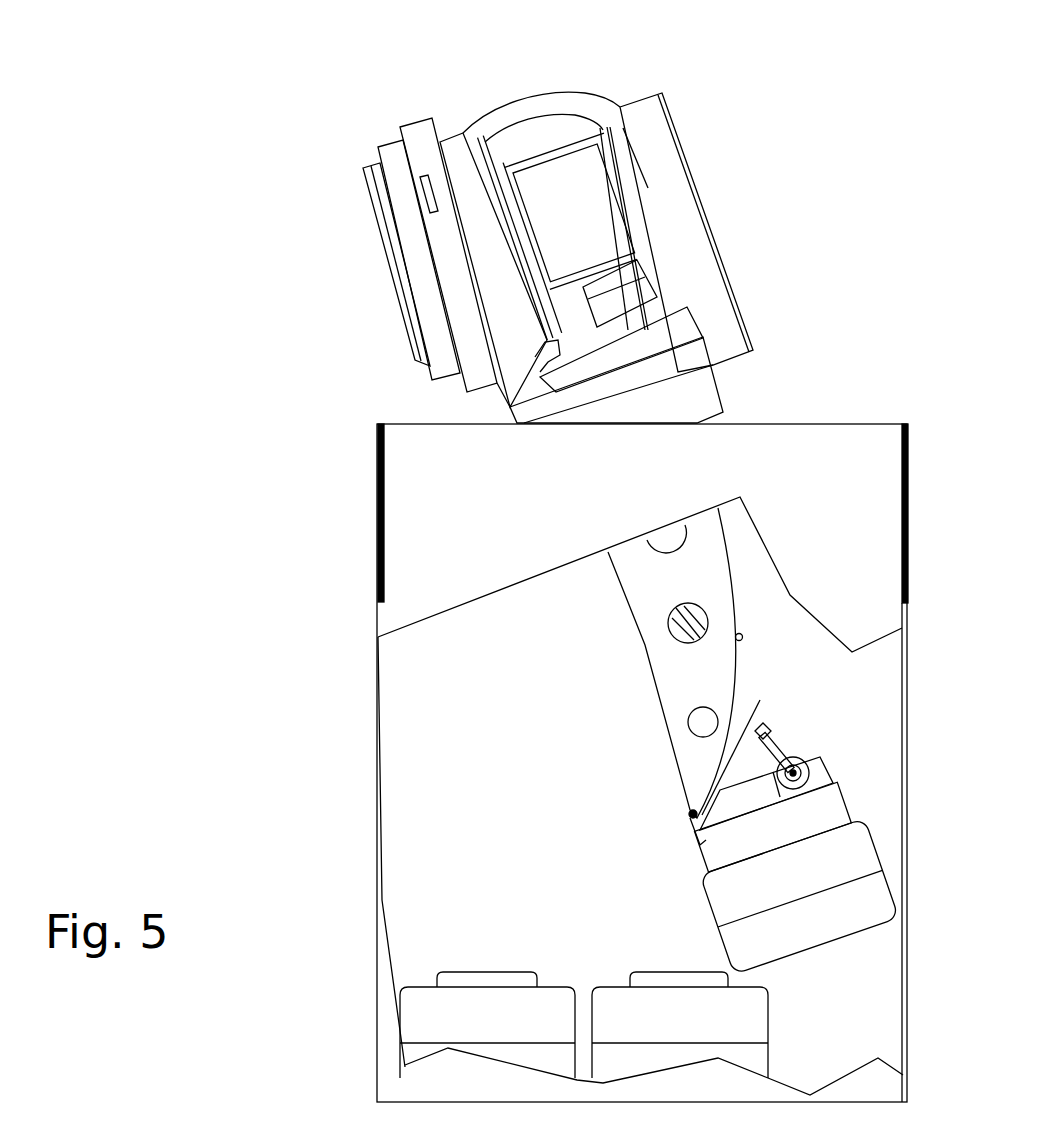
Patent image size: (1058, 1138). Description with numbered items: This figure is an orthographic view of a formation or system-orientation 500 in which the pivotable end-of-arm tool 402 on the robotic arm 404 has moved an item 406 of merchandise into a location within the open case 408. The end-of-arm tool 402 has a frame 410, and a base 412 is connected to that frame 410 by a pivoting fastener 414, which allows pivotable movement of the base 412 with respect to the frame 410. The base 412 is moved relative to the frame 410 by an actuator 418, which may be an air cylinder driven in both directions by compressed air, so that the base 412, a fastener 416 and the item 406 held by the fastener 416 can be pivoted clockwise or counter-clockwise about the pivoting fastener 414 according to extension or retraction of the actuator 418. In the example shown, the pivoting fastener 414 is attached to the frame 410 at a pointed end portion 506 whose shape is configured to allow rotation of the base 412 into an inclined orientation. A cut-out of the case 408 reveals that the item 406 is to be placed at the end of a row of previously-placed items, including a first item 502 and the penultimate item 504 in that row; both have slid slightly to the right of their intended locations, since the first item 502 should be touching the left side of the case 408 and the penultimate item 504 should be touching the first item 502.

The system-orientation 500 is at (814, 57).
The robotic arm 404 is at (363, 207).
The case 408 is at (375, 752).
The pivotable end-of-arm tool 402 is at (568, 676).
The frame 410 is at (642, 640).
The pointed end portion 506 is at (698, 812).
The pivoting fastener 414 is at (690, 812).
The fastener 416 is at (697, 842).
The actuator 418 is at (768, 738).
The base 412 is at (830, 780).
The item 406 is at (705, 909).
The first item 502 is at (488, 968).
The penultimate item 504 is at (645, 968).